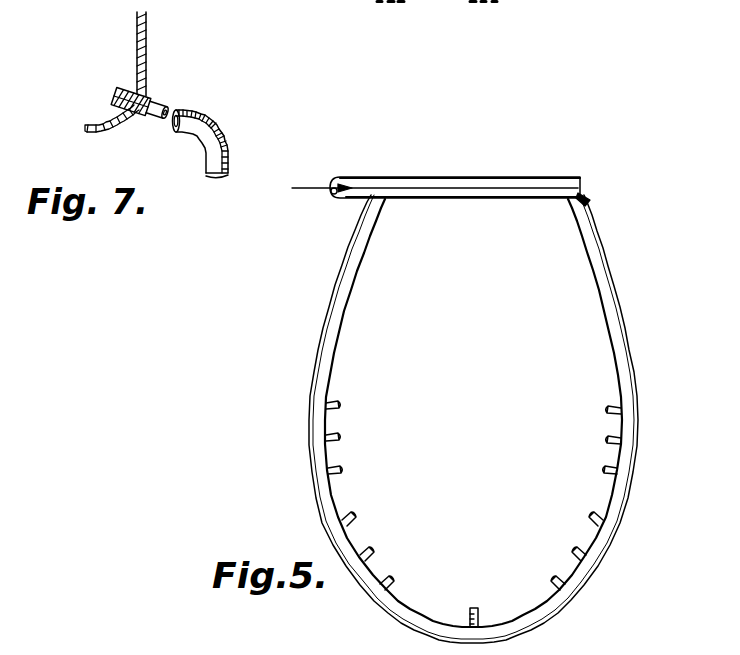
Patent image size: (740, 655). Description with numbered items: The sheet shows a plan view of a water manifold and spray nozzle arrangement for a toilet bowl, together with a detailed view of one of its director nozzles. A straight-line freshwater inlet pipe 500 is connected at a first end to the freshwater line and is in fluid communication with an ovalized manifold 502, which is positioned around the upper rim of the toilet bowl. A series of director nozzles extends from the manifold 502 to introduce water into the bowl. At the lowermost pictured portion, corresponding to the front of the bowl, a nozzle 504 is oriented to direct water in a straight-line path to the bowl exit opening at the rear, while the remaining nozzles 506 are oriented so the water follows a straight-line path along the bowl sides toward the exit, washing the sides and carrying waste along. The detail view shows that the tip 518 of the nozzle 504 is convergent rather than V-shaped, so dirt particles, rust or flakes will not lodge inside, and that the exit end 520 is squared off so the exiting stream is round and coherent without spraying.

In FIG. 5, the freshwater inlet pipe 500 is at (503, 177).
In FIG. 7, the ovalized manifold 502 is at (149, 50).
In FIG. 5, the ovalized manifold 502 is at (617, 294).
In FIG. 7, the director nozzle 504 is at (203, 118).
In FIG. 5, the director nozzle 504 is at (476, 608).
In FIG. 5, the director nozzles 506 is at (340, 404).
In FIG. 7, the nozzle tip 518 is at (127, 81).
In FIG. 7, the exit end of the nozzle 520 is at (226, 176).